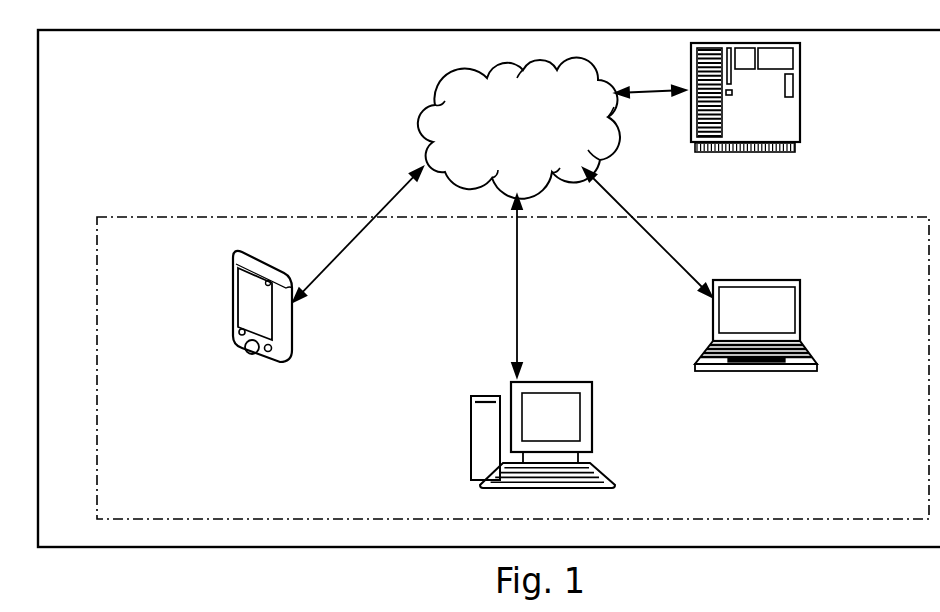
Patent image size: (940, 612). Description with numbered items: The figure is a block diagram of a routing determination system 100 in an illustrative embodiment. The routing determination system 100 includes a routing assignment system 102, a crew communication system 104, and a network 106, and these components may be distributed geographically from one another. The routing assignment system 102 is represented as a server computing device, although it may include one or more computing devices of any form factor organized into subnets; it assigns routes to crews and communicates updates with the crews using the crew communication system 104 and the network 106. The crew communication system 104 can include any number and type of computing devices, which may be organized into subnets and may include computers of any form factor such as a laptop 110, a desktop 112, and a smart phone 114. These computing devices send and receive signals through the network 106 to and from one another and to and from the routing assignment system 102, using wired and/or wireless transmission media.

The routing determination system 100 is at (141, 100).
The routing assignment system 102 is at (800, 93).
The crew communication system 104 is at (188, 484).
The network 106 is at (489, 146).
The laptop 110 is at (800, 312).
The desktop 112 is at (471, 430).
The smart phone 114 is at (232, 283).